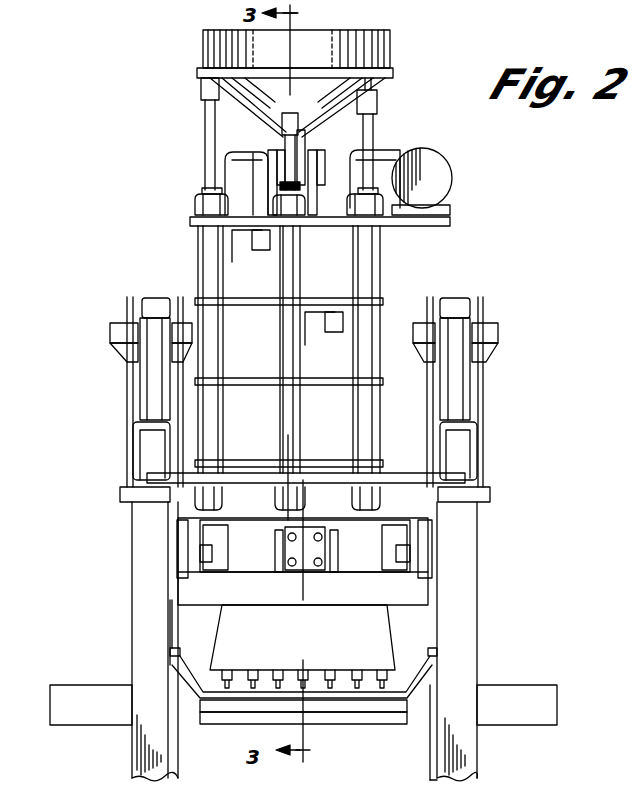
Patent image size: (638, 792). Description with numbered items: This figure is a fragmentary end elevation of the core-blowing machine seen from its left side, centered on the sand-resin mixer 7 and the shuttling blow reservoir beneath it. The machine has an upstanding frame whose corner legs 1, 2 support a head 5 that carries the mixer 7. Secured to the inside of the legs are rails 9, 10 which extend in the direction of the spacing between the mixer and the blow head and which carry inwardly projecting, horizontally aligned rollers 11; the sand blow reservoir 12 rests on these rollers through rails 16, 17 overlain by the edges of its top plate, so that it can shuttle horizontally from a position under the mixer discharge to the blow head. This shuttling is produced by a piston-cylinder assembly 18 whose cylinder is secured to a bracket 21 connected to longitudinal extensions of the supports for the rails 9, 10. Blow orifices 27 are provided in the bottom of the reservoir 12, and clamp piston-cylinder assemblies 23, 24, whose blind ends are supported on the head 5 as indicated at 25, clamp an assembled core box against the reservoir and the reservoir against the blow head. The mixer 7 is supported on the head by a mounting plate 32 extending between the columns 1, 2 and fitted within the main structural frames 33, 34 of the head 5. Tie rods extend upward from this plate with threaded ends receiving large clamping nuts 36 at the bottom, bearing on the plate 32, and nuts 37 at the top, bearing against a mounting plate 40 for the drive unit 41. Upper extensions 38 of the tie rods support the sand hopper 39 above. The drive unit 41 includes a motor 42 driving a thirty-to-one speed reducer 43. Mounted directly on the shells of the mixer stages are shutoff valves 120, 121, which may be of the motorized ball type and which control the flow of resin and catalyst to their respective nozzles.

The leg 1 is at (130, 765).
The leg 2 is at (472, 765).
The head 5 is at (495, 382).
The sand-resin mixer 7 is at (388, 272).
The rail 9 is at (193, 568).
The rail 10 is at (415, 568).
The rollers 11 is at (212, 553).
The sand blow reservoir 12 is at (317, 677).
The rail 16 is at (205, 535).
The rail 17 is at (400, 535).
The piston-cylinder assembly 18 is at (310, 570).
The bracket 21 is at (252, 600).
The clamp piston-cylinder assembly 23 is at (150, 380).
The clamp piston-cylinder assembly 24 is at (465, 404).
The blind end support 25 is at (470, 308).
The blow orifices 27 is at (330, 688).
The mounting plate 32 is at (470, 483).
The main structural frame 33 is at (133, 445).
The main structural frame 34 is at (480, 452).
The lower clamping nut 36 is at (388, 495).
The upper clamping nut 37 is at (193, 206).
The upper extension 38 is at (374, 124).
The sand hopper 39 is at (385, 48).
The mounting plate 40 is at (450, 222).
The drive unit 41 is at (429, 170).
The motor 42 is at (437, 160).
The speed reducer 43 is at (237, 152).
The shutoff valve 120 is at (258, 250).
The shutoff valve 121 is at (333, 332).